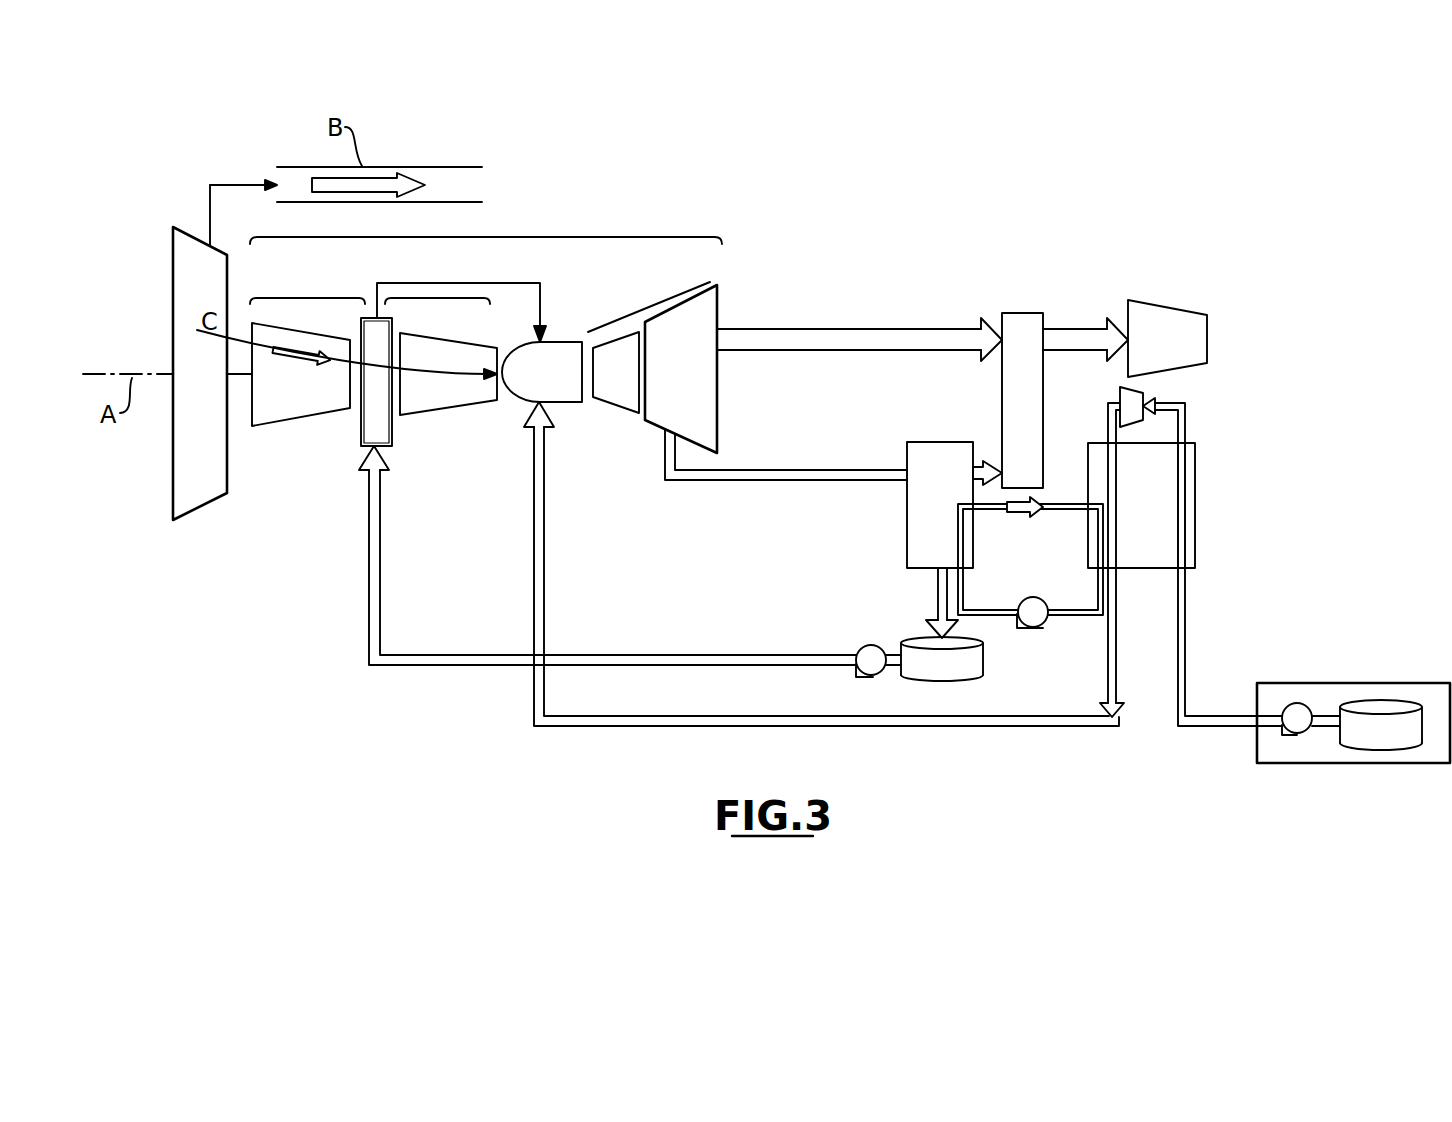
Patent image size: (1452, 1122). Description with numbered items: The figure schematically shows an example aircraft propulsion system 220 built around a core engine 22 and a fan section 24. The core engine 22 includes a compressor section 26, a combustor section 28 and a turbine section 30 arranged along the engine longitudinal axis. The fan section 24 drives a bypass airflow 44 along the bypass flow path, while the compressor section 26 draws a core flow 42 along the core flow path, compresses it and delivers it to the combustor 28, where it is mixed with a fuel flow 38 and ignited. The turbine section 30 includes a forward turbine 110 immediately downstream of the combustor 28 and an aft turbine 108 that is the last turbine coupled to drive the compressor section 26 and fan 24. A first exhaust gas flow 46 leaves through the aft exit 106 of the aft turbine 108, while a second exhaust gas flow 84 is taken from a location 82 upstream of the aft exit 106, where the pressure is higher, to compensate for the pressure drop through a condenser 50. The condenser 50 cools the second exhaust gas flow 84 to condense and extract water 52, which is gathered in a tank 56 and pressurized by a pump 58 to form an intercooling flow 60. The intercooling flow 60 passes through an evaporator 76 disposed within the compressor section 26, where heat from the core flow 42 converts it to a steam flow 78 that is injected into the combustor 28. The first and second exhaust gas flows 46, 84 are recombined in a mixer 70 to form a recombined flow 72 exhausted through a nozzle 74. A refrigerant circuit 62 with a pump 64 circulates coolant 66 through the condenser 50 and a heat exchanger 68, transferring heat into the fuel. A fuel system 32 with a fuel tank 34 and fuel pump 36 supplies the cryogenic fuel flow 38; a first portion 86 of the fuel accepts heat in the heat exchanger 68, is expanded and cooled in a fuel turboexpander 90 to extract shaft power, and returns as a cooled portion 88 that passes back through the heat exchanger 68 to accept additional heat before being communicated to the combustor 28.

The core engine 22 is at (497, 237).
The fan section 24 is at (195, 505).
The compressor section 26 is at (313, 298).
The combustor section 28 is at (520, 357).
The turbine section 30 is at (645, 308).
The fuel system 32 is at (1352, 683).
The fuel tank 34 is at (1377, 747).
The fuel pump 36 is at (1299, 733).
The fuel flow 38 is at (1187, 672).
The core flow 42 is at (300, 366).
The bypass airflow 44 is at (384, 182).
The first exhaust gas flow 46 is at (818, 345).
The condenser 50 is at (908, 518).
The water 52 is at (937, 587).
The tank 56 is at (965, 675).
The pump 58 is at (878, 672).
The intercooling flow 60 is at (376, 522).
The refrigerant circuit 62 is at (1068, 630).
The pump 64 is at (1033, 600).
The coolant 66 is at (1020, 511).
The heat exchanger 68 is at (1148, 472).
The mixer 70 is at (1016, 313).
The recombined flow 72 is at (1073, 327).
The nozzle 74 is at (1202, 312).
The evaporator 76 is at (358, 423).
The steam flow 78 is at (466, 283).
The location 82 is at (652, 448).
The second exhaust gas flow 84 is at (770, 478).
The first portion of the fuel flow 86 is at (1184, 523).
The cooled portion of the fuel flow 88 is at (1118, 617).
The fuel turboexpander 90 is at (1120, 396).
The aft exit 106 is at (735, 419).
The aft turbine 108 is at (707, 310).
The forward turbine 110 is at (617, 388).
The propulsion system 220 is at (1125, 196).